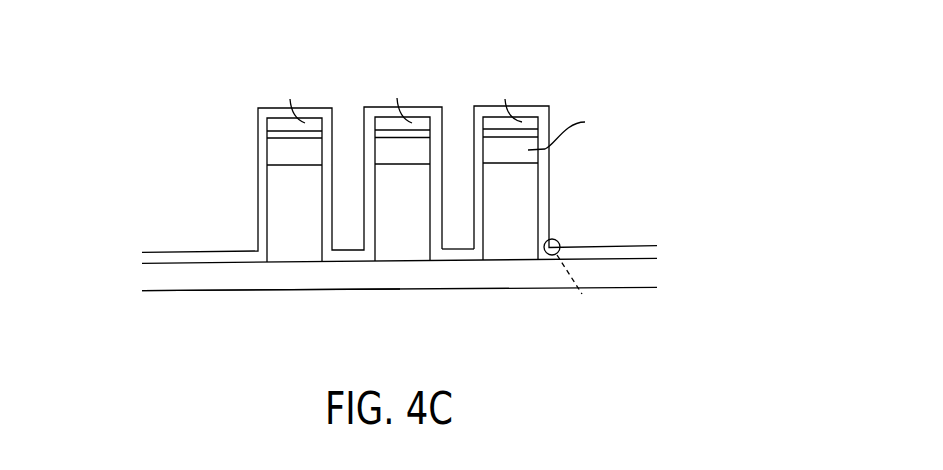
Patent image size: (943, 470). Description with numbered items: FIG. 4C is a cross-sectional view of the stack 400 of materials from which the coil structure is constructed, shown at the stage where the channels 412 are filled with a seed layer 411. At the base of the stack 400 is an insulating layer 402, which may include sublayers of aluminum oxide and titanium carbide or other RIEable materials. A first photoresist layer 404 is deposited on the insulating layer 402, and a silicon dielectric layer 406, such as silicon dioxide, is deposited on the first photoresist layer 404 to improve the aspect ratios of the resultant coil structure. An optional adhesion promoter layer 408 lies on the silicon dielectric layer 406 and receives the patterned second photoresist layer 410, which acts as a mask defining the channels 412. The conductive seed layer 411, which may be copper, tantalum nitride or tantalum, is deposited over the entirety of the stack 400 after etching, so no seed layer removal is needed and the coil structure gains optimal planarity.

The stack 400 is at (233, 322).
The insulating layer 402 is at (135, 279).
The first photoresist layer 404 is at (250, 225).
The silicon dielectric layer 406 is at (250, 164).
The adhesion promoter layer 408 is at (252, 133).
The second photoresist layer 410 is at (252, 122).
The seed layer 411 is at (708, 200).
The channels 412 is at (459, 116).